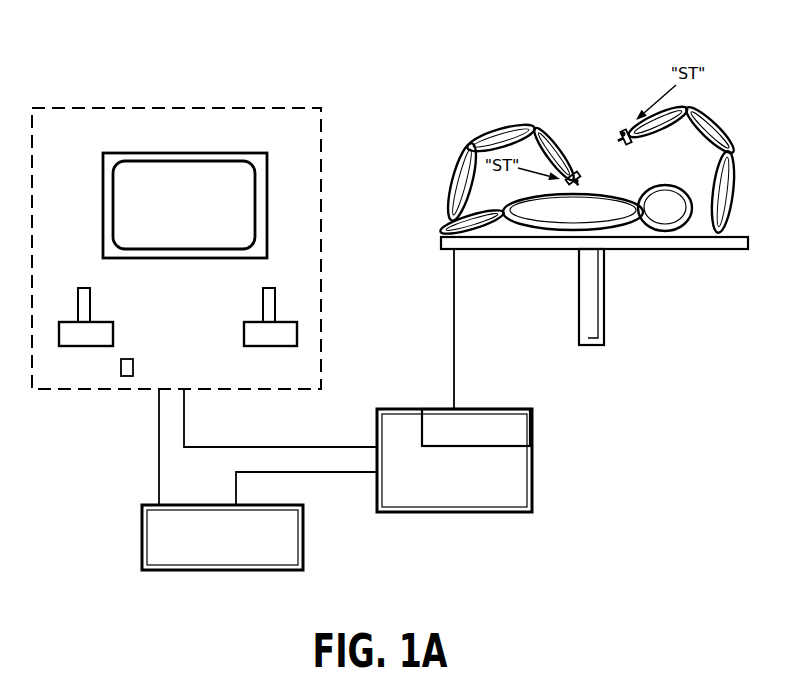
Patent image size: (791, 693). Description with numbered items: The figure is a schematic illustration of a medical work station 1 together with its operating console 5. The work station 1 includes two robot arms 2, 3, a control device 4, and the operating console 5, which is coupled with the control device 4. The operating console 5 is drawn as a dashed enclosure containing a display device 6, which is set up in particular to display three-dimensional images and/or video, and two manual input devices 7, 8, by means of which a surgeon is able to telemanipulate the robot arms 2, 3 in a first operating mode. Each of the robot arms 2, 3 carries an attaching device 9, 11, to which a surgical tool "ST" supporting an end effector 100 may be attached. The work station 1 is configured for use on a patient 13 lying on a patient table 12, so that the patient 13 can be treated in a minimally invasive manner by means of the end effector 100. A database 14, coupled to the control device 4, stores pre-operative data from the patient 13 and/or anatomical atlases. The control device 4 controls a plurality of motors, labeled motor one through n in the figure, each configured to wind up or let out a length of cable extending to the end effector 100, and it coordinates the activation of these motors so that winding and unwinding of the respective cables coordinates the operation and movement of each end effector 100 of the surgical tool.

The medical work station 1 is at (666, 446).
The robot arm 2 is at (453, 112).
The robot arm 3 is at (740, 104).
The control device 4 is at (445, 478).
The operating console 5 is at (112, 62).
The display device 6 is at (180, 210).
The manual input device 7 is at (71, 337).
The manual input device 8 is at (270, 337).
The attaching device 9 is at (575, 176).
The attaching device 11 is at (630, 130).
The patient table 12 is at (529, 243).
The patient 13 is at (607, 217).
The database 14 is at (212, 547).
The end effector 100 is at (578, 177).